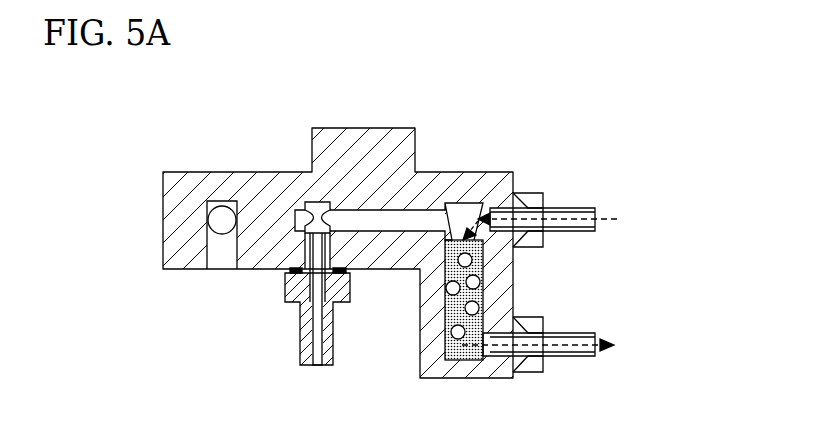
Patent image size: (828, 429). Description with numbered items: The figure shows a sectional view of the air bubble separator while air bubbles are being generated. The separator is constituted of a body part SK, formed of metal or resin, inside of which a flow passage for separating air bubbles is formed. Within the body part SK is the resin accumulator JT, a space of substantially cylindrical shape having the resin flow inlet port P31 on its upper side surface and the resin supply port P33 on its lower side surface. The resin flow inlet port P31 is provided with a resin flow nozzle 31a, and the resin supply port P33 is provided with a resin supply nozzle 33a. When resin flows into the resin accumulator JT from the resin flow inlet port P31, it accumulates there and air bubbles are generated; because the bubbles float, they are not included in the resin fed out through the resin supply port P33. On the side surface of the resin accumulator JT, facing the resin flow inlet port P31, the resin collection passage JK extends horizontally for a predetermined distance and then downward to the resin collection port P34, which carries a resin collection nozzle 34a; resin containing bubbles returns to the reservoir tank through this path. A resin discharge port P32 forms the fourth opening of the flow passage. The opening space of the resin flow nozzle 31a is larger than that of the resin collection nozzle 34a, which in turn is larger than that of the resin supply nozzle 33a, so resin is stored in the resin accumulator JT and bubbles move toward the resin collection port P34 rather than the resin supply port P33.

The body part SK is at (353, 128).
The resin collection passage JK is at (413, 214).
The resin accumulator JT is at (478, 265).
The resin flow inlet port P31 is at (553, 205).
The resin flow nozzle 31a is at (582, 205).
The resin discharge port P32 is at (222, 222).
The resin supply port P33 is at (538, 338).
The resin supply nozzle 33a is at (588, 338).
The resin collection port P34 is at (333, 310).
The resin collection nozzle 34a is at (333, 353).